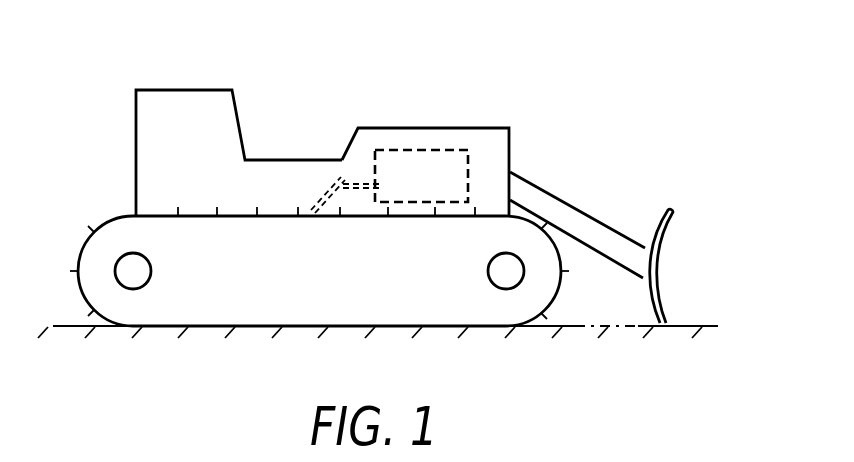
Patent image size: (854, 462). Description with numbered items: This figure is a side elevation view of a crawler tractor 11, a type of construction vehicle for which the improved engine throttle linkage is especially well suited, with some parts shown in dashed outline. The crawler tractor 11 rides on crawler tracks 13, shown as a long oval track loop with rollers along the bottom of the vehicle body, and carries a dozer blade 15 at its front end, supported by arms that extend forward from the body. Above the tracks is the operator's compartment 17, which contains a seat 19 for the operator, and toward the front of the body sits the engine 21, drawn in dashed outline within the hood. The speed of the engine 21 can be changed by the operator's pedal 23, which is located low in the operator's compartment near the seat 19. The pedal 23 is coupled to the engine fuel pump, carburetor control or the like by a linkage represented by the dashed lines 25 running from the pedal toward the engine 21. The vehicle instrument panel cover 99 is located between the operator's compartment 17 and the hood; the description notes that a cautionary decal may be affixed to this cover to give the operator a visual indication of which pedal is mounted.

The crawler tractor 11 is at (136, 124).
The crawler tracks 13 is at (102, 230).
The dozer blade 15 is at (663, 232).
The operator's compartment 17 is at (278, 75).
The seat 19 is at (245, 160).
The engine 21 is at (437, 155).
The operator's pedal 23 is at (337, 186).
The linkage 25 is at (367, 190).
The vehicle instrument panel cover 99 is at (348, 148).